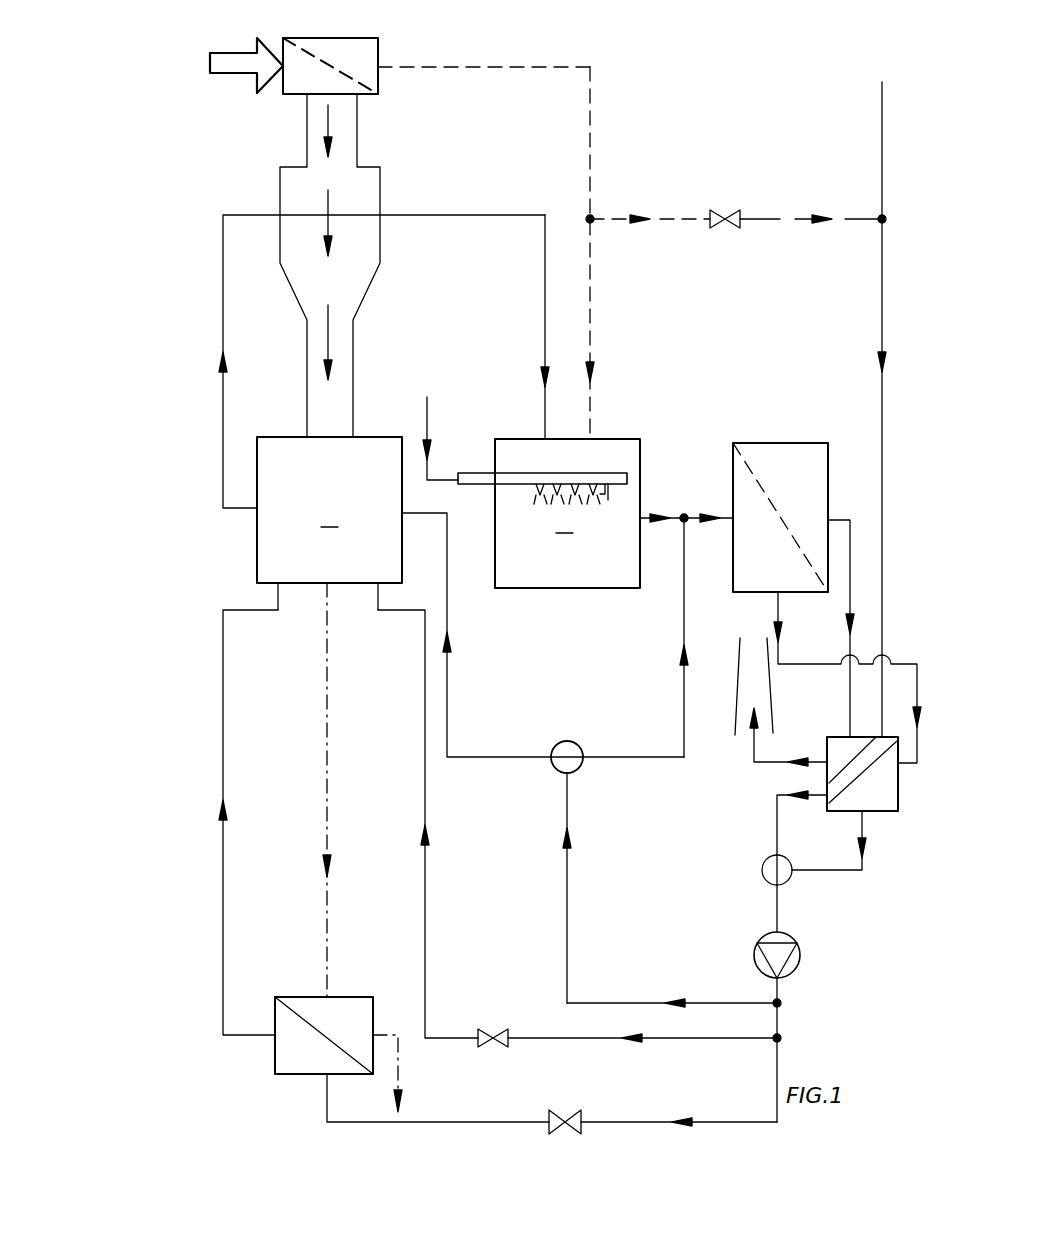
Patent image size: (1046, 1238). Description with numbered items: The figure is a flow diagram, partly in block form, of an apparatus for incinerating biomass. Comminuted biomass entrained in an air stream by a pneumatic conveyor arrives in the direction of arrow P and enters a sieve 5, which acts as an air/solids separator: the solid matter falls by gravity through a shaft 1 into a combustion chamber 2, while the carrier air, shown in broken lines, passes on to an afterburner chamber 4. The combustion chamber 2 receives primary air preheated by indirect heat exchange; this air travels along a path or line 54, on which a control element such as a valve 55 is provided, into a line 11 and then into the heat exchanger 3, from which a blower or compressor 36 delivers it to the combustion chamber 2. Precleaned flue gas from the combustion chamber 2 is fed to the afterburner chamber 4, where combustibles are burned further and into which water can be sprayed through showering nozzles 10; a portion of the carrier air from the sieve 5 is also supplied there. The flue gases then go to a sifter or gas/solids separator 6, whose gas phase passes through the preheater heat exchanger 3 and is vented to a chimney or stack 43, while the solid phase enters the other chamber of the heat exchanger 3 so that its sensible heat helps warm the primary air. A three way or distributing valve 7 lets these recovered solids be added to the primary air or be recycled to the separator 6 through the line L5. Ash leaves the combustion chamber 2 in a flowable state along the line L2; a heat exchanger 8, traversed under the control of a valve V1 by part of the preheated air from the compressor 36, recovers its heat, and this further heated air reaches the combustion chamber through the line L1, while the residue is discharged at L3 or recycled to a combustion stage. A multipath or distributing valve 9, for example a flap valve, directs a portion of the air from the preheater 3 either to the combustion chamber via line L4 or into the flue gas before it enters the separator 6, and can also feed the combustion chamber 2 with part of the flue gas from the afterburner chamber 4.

The shaft 1 is at (348, 137).
The combustion chamber 2 is at (329, 523).
The heat exchanger 3 is at (905, 833).
The afterburner chamber 4 is at (578, 492).
The sieve 5 is at (374, 28).
The gas/solids separator 6 is at (787, 428).
The three way distributing valve 7 is at (766, 868).
The heat exchanger 8 is at (291, 978).
The multipath distributing valve 9 is at (578, 722).
The showering nozzles 10 is at (603, 478).
The line 11 is at (882, 268).
The blower or compressor 36 is at (800, 961).
The chimney or stack 43 is at (752, 665).
The line 54 is at (776, 216).
The valve 55 is at (721, 211).
The biomass feed direction arrow P is at (228, 54).
The line L1 is at (222, 771).
The line L2 is at (328, 700).
The discharge line L3 is at (398, 1055).
The line L4 is at (447, 685).
The line L5 is at (684, 675).
The valve V1 is at (561, 1118).